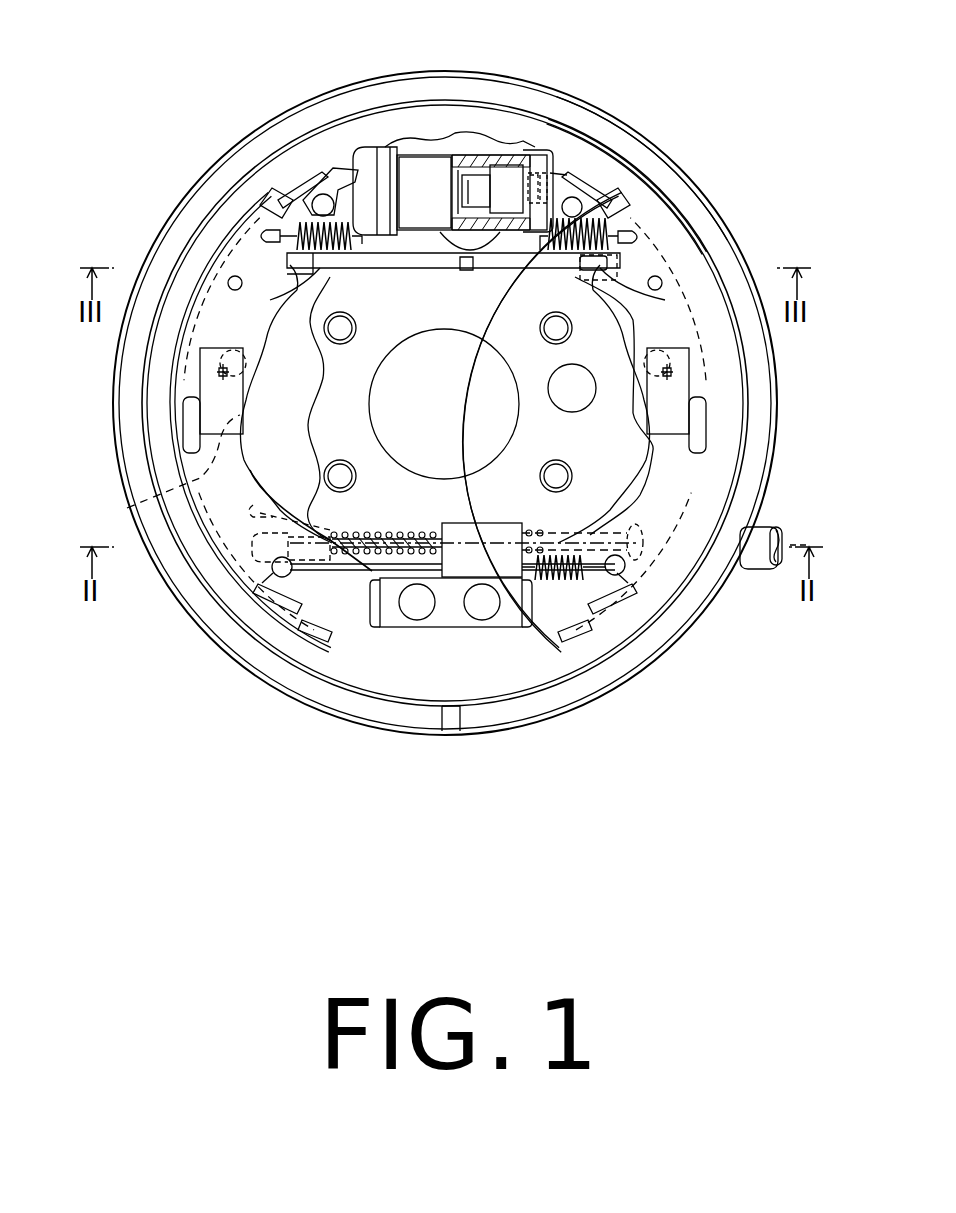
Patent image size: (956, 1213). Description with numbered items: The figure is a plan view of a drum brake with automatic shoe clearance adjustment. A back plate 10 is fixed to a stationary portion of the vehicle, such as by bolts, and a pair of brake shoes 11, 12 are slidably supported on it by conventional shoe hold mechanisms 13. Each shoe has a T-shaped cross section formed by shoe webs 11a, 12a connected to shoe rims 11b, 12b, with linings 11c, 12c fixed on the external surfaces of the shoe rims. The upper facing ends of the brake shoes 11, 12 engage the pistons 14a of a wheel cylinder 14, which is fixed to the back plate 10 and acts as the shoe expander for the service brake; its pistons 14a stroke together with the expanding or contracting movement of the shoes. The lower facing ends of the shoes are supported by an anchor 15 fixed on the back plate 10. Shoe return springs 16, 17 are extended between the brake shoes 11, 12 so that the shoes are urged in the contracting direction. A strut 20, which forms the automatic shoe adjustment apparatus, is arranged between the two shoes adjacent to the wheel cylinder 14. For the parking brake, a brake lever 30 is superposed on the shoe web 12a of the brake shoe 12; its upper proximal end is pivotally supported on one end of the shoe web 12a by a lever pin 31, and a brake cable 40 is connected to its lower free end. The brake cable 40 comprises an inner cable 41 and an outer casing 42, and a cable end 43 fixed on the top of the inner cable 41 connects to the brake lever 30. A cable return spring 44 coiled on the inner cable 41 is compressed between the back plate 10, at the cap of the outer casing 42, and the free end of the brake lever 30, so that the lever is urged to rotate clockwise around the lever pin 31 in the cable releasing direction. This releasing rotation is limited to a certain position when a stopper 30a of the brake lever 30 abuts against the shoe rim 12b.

The back plate 10 is at (583, 92).
The brake shoe 11 is at (476, 414).
The shoe web 11a is at (625, 232).
The shoe rim 11b is at (668, 238).
The lining 11c is at (694, 260).
The brake shoe 12 is at (210, 363).
The shoe web 12a is at (262, 230).
The shoe rim 12b is at (248, 248).
The lining 12c is at (260, 265).
The shoe hold mechanism 13 is at (200, 388).
The wheel cylinder 14 is at (443, 130).
The piston 14a is at (408, 172).
The anchor 15 is at (450, 628).
The shoe return spring 16 is at (590, 222).
The shoe return spring 17 is at (557, 583).
The strut 20 is at (430, 285).
The brake lever 30 is at (283, 347).
The stopper 30a is at (156, 472).
The lever pin 31 is at (328, 190).
The brake cable 40 is at (782, 532).
The inner cable 41 is at (442, 530).
The outer casing 42 is at (760, 566).
The cable end 43 is at (257, 568).
The cable return spring 44 is at (452, 530).